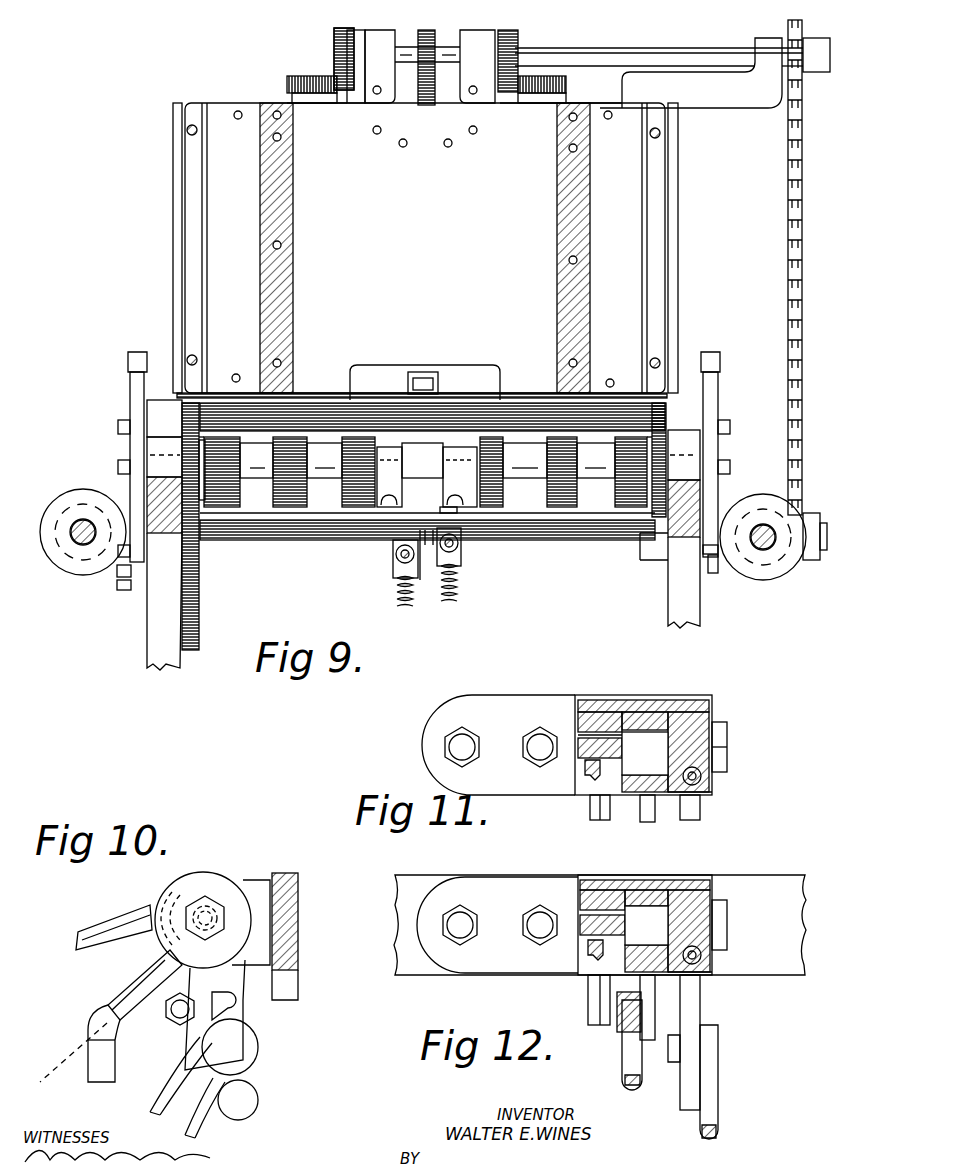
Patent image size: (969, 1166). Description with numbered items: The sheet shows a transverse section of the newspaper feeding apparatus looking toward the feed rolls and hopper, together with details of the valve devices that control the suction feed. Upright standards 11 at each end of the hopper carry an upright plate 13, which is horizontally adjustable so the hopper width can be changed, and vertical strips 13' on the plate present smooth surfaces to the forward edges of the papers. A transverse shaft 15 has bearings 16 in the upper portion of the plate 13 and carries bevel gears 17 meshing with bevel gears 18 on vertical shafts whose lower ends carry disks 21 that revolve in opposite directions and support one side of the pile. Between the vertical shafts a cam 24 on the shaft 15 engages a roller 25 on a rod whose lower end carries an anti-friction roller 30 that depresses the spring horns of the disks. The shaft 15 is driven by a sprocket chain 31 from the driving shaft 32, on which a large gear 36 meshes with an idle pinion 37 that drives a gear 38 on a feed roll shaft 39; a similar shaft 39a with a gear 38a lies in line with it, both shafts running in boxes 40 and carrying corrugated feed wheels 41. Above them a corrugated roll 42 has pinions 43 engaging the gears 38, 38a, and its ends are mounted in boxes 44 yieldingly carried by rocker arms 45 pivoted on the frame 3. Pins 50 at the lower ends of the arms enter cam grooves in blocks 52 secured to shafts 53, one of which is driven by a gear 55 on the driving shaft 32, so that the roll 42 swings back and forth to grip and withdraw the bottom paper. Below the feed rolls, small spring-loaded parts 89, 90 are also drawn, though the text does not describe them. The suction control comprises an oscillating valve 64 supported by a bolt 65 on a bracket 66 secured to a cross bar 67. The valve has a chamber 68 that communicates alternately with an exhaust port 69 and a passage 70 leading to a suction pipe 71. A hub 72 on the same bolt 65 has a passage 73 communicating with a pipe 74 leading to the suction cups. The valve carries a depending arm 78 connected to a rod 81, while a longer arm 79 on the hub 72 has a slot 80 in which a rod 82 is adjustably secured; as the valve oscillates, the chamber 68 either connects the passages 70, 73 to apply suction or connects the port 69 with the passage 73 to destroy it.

In FIG. 9, the frame 3 is at (147, 632).
In FIG. 9, the upright standards 11 is at (173, 146).
In FIG. 9, the upright plate 13 is at (422, 242).
In FIG. 9, the vertical strips 13' is at (425, 248).
In FIG. 9, the transverse shaft 15 is at (600, 50).
In FIG. 9, the bearings 16 is at (372, 32).
In FIG. 9, the bevel gears 17 is at (340, 30).
In FIG. 9, the bevel gears 18 is at (298, 82).
In FIG. 9, the disks 21 is at (432, 398).
In FIG. 9, the cam 24 is at (428, 32).
In FIG. 9, the roller 25 is at (430, 105).
In FIG. 9, the anti-friction roller 30 is at (432, 372).
In FIG. 9, the sprocket chain 31 is at (790, 252).
In FIG. 9, the driving shaft 32 is at (355, 545).
In FIG. 9, the large gear 36 is at (199, 624).
In FIG. 9, the idle pinion 37 is at (200, 480).
In FIG. 9, the gear 38 is at (205, 510).
In FIG. 9, the gear 38a is at (650, 522).
In FIG. 9, the feed roll shaft 39 is at (312, 512).
In FIG. 9, the feed roll shaft 39a is at (532, 512).
In FIG. 9, the boxes 40 is at (430, 490).
In FIG. 9, the feed wheels 41 is at (492, 514).
In FIG. 9, the corrugated roll 42 is at (446, 458).
In FIG. 9, the pinions 43 is at (184, 402).
In FIG. 9, the boxes 44 is at (128, 412).
In FIG. 9, the rocker arms 45 is at (130, 445).
In FIG. 9, the pins 50 is at (118, 568).
In FIG. 9, the blocks 52 is at (433, 534).
In FIG. 9, the shafts 53 is at (83, 534).
In FIG. 9, the gear 55 is at (122, 590).
In FIG. 11, the oscillating valve 64 is at (645, 698).
In FIG. 11, the bolt 65 is at (728, 740).
In FIG. 10, the bolt 65 is at (207, 912).
In FIG. 11, the bracket 66 is at (470, 700).
In FIG. 12, the bracket 66 is at (480, 880).
In FIG. 10, the bracket 66 is at (250, 876).
In FIG. 12, the cross bar 67 is at (600, 925).
In FIG. 10, the cross bar 67 is at (300, 882).
In FIG. 11, the chamber 68 is at (645, 753).
In FIG. 12, the chamber 68 is at (646, 925).
In FIG. 11, the exhaust port 69 is at (578, 702).
In FIG. 12, the exhaust port 69 is at (580, 882).
In FIG. 11, the passage 70 is at (598, 766).
In FIG. 12, the passage 70 is at (600, 945).
In FIG. 11, the suction pipe 71 is at (592, 810).
In FIG. 12, the suction pipe 71 is at (590, 1000).
In FIG. 10, the suction pipe 71 is at (122, 990).
In FIG. 11, the hub 72 is at (714, 714).
In FIG. 12, the hub 72 is at (712, 892).
In FIG. 10, the hub 72 is at (172, 892).
In FIG. 11, the passage 73 is at (730, 748).
In FIG. 12, the passage 73 is at (712, 930).
In FIG. 11, the pipe 74 is at (712, 785).
In FIG. 12, the pipe 74 is at (712, 972).
In FIG. 10, the pipe 74 is at (105, 933).
In FIG. 11, the depending arm 78 is at (647, 822).
In FIG. 12, the depending arm 78 is at (650, 1042).
In FIG. 10, the depending arm 78 is at (166, 1018).
In FIG. 11, the arm 79 is at (700, 812).
In FIG. 12, the arm 79 is at (700, 1006).
In FIG. 10, the arm 79 is at (246, 1015).
In FIG. 10, the slot 80 is at (228, 1003).
In FIG. 9, the rod 81 is at (444, 568).
In FIG. 12, the rod 81 is at (622, 1063).
In FIG. 10, the rod 81 is at (147, 1092).
In FIG. 9, the rod 82 is at (420, 582).
In FIG. 12, the rod 82 is at (712, 1116).
In FIG. 10, the rod 82 is at (205, 1125).
In FIG. 9, the spring 89 is at (458, 604).
In FIG. 9, the spring 90 is at (398, 598).